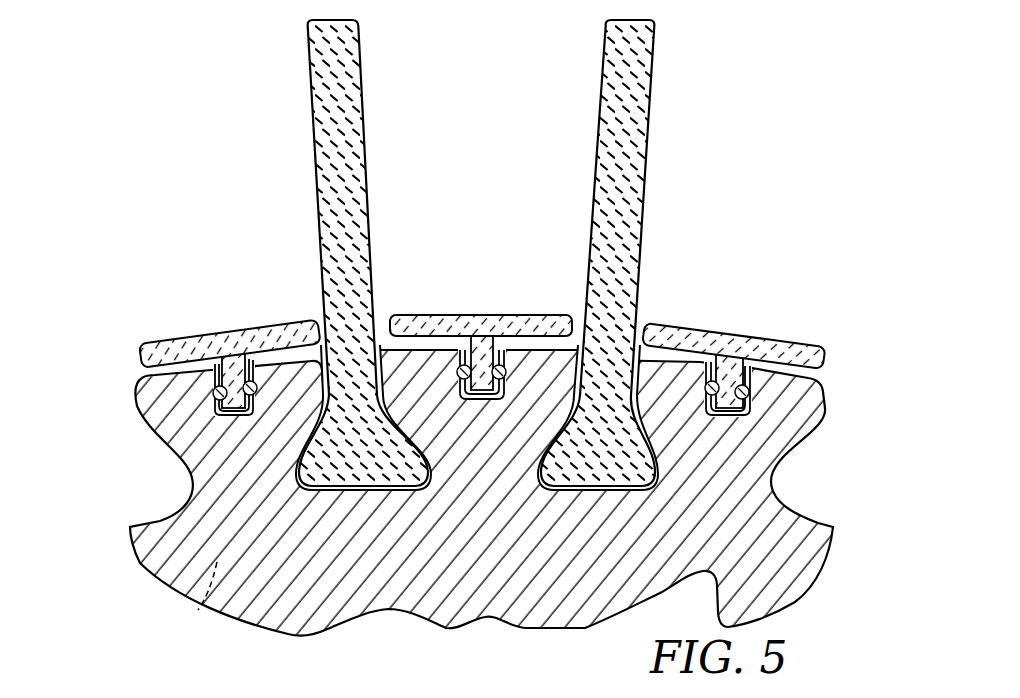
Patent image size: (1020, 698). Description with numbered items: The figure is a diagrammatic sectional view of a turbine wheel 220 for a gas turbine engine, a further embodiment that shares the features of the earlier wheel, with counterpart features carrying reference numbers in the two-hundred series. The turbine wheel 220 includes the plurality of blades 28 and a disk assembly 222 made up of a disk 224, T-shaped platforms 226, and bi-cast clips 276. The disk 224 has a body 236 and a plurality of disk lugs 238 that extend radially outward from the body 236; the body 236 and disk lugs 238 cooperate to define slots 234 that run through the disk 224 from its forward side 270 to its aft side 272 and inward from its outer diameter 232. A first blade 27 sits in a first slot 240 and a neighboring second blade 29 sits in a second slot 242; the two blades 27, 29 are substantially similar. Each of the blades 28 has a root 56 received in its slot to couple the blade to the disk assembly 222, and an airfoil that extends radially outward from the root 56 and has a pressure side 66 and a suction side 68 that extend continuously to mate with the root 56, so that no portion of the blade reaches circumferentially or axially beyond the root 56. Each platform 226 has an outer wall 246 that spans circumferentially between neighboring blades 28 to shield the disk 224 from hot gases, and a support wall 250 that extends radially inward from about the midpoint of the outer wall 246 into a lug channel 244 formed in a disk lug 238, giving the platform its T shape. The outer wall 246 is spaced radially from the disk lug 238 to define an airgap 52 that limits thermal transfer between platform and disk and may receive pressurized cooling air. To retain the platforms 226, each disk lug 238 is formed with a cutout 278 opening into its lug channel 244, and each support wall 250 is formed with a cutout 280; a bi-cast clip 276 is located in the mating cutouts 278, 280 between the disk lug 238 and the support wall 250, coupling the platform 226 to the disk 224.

The first blade 27 is at (381, 120).
The blades 28 is at (668, 91).
The second blade 29 is at (666, 152).
The airgap 52 is at (386, 338).
The root 56 is at (618, 460).
The pressure side 66 is at (644, 226).
The suction side 68 is at (592, 163).
The turbine wheel 220 is at (131, 160).
The disk assembly 222 is at (188, 340).
The disk 224 is at (140, 504).
The platform 226 is at (488, 300).
The third anchor 232 is at (739, 325).
The liner first end 234 is at (299, 506).
The base body portion 236 is at (758, 554).
The disk lug 238 is at (845, 408).
The liner second end 240 is at (427, 506).
The liner first end 242 is at (539, 506).
The lug channel 244 is at (266, 414).
The anchor plate 246 is at (420, 299).
The support wall 250 is at (430, 340).
The base lower portion 270 is at (172, 587).
The hidden edge 272 is at (212, 606).
The bi-cast clip 276 is at (505, 362).
The cutout 278 is at (770, 372).
The cutout 280 is at (738, 382).